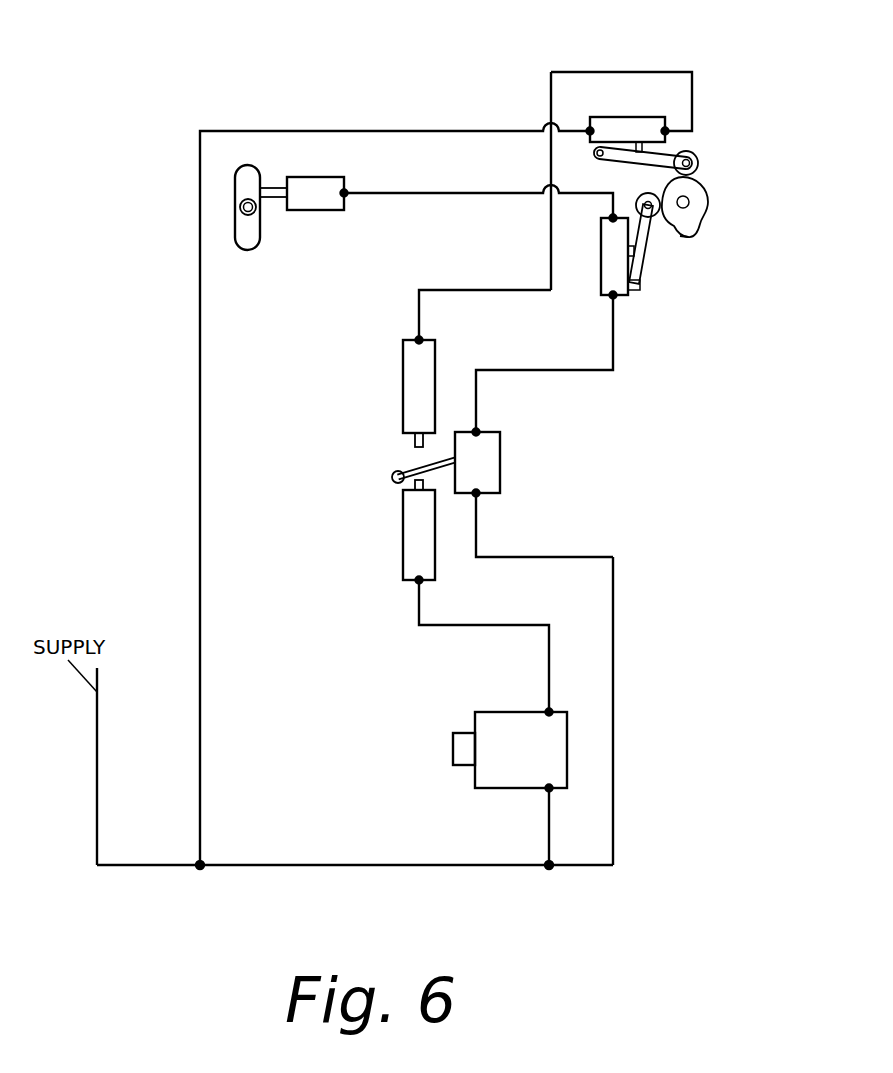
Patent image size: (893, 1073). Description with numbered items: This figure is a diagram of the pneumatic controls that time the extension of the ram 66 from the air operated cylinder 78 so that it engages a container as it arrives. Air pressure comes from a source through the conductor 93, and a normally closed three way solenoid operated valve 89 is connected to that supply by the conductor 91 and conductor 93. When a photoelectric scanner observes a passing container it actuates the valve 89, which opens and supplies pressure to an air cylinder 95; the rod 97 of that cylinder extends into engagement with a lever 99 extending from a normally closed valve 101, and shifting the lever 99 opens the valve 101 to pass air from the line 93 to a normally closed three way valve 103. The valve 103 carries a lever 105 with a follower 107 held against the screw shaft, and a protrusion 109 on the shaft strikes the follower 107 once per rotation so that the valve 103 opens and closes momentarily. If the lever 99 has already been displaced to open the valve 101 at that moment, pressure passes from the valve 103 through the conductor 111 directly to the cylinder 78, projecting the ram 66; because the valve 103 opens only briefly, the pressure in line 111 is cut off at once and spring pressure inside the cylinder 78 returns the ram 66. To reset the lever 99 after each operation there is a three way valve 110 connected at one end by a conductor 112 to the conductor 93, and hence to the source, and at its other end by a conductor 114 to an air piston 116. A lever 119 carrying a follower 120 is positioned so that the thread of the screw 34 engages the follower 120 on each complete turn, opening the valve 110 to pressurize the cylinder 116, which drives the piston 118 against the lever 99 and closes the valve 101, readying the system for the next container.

The screw 34 is at (704, 218).
The ram 66 is at (270, 190).
The air operated cylinder 78 is at (313, 181).
The normally closed three way solenoid operated valve 89 is at (476, 780).
The conductor 91 is at (549, 826).
The conductor 93 is at (302, 865).
The air cylinder 95 is at (405, 573).
The rod 97 is at (412, 485).
The lever 99 is at (445, 450).
The normally closed valve 101 is at (500, 468).
The normally closed three way valve 103 is at (603, 254).
The lever 105 is at (646, 272).
The follower 107 is at (643, 201).
The protrusion 109 is at (689, 242).
The three way valve 110 is at (625, 121).
The conductor 111 is at (456, 193).
The conductor 112 is at (200, 207).
The conductor 114 is at (585, 72).
The air piston 116 is at (406, 353).
The piston 118 is at (412, 444).
The lever 119 is at (664, 161).
The follower 120 is at (699, 161).